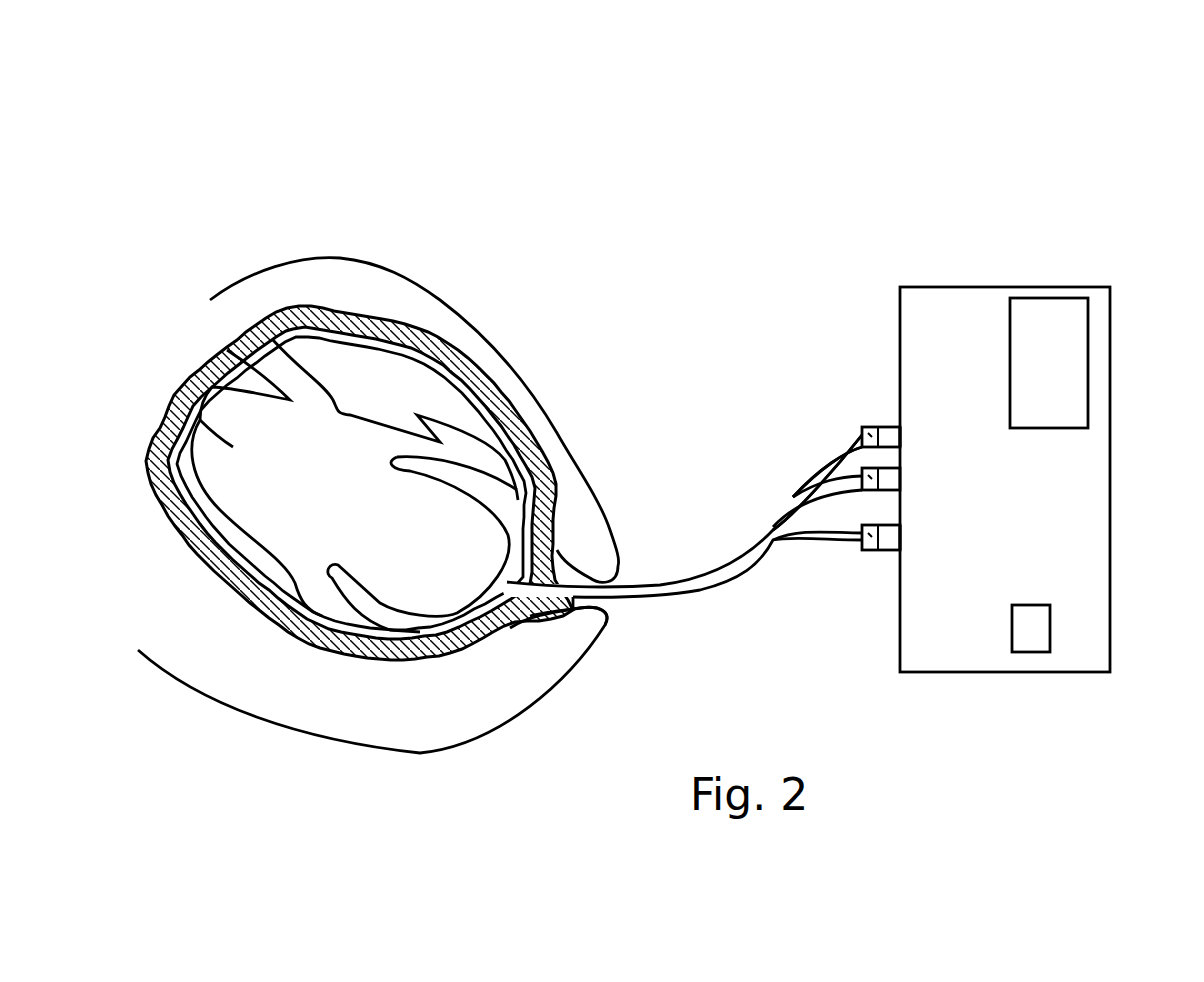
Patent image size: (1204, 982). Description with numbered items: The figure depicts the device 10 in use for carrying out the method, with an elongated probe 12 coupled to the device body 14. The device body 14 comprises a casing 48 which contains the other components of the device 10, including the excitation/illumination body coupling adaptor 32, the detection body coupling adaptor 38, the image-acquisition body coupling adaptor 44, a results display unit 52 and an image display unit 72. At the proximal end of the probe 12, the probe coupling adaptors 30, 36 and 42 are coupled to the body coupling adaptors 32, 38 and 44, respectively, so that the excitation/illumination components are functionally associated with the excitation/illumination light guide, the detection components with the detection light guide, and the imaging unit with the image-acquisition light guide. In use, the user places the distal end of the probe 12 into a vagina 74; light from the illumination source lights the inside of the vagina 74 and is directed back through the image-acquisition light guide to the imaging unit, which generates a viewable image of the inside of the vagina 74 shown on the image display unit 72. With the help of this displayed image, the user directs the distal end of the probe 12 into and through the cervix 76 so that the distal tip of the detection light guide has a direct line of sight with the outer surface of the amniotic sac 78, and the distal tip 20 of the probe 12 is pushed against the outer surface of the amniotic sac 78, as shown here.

The device 10 is at (908, 145).
The probe 12 is at (711, 565).
The device body 14 is at (1047, 431).
The distal tip 20 is at (555, 550).
The probe coupling adaptor 30 is at (862, 427).
The excitation/illumination body coupling adaptor 32 is at (900, 435).
The probe coupling adaptor 36 is at (857, 458).
The detection body coupling adaptor 38 is at (900, 478).
The probe coupling adaptor 42 is at (868, 555).
The image-acquisition body coupling adaptor 44 is at (892, 535).
The casing 48 is at (1035, 542).
The results display unit 52 is at (1033, 628).
The image display unit 72 is at (1080, 360).
The vagina 74 is at (590, 610).
The cervix 76 is at (537, 612).
The amniotic sac 78 is at (477, 415).